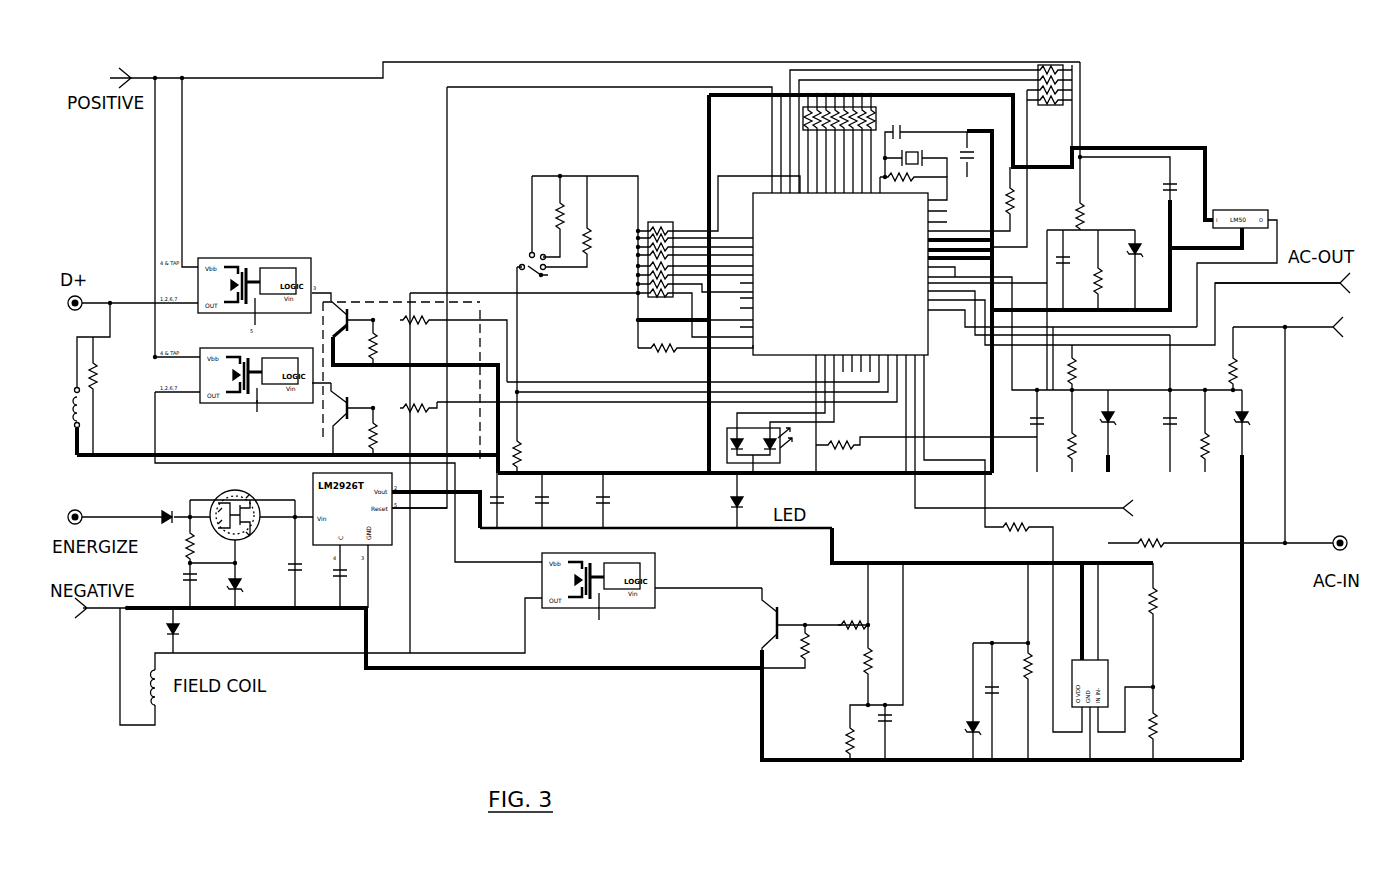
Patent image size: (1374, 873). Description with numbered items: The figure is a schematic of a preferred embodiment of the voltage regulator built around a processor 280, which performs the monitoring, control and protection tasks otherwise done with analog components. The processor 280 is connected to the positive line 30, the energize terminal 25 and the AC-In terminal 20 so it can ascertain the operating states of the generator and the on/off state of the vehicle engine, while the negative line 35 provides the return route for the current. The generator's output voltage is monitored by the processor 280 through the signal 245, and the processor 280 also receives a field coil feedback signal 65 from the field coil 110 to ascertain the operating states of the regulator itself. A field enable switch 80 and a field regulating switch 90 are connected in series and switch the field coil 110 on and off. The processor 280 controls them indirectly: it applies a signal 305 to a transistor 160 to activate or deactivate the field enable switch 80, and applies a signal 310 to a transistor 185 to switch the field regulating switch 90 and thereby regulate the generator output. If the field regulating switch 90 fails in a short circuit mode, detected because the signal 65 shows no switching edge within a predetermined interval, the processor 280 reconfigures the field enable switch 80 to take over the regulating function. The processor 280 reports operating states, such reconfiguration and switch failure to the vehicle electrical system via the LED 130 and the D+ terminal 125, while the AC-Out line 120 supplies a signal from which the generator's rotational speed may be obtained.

The positive line 30 is at (133, 75).
The signal 245 is at (155, 193).
The D+ terminal 125 is at (80, 293).
The field coil feedback signal 65 is at (410, 293).
The processor 280 is at (753, 213).
The field enable switch 80 is at (237, 399).
The transistor 160 is at (331, 410).
The signal 305 is at (525, 403).
The light emitting diode (LED) 130 is at (727, 455).
The energize terminal 25 is at (82, 509).
The negative line 35 is at (84, 613).
The field coil 110 is at (158, 680).
The field regulating switch 90 is at (605, 608).
The transistor 185 is at (784, 628).
The signal 310 is at (868, 572).
The AC-Out line 120 is at (1332, 288).
The AC-In terminal 20 is at (1333, 548).